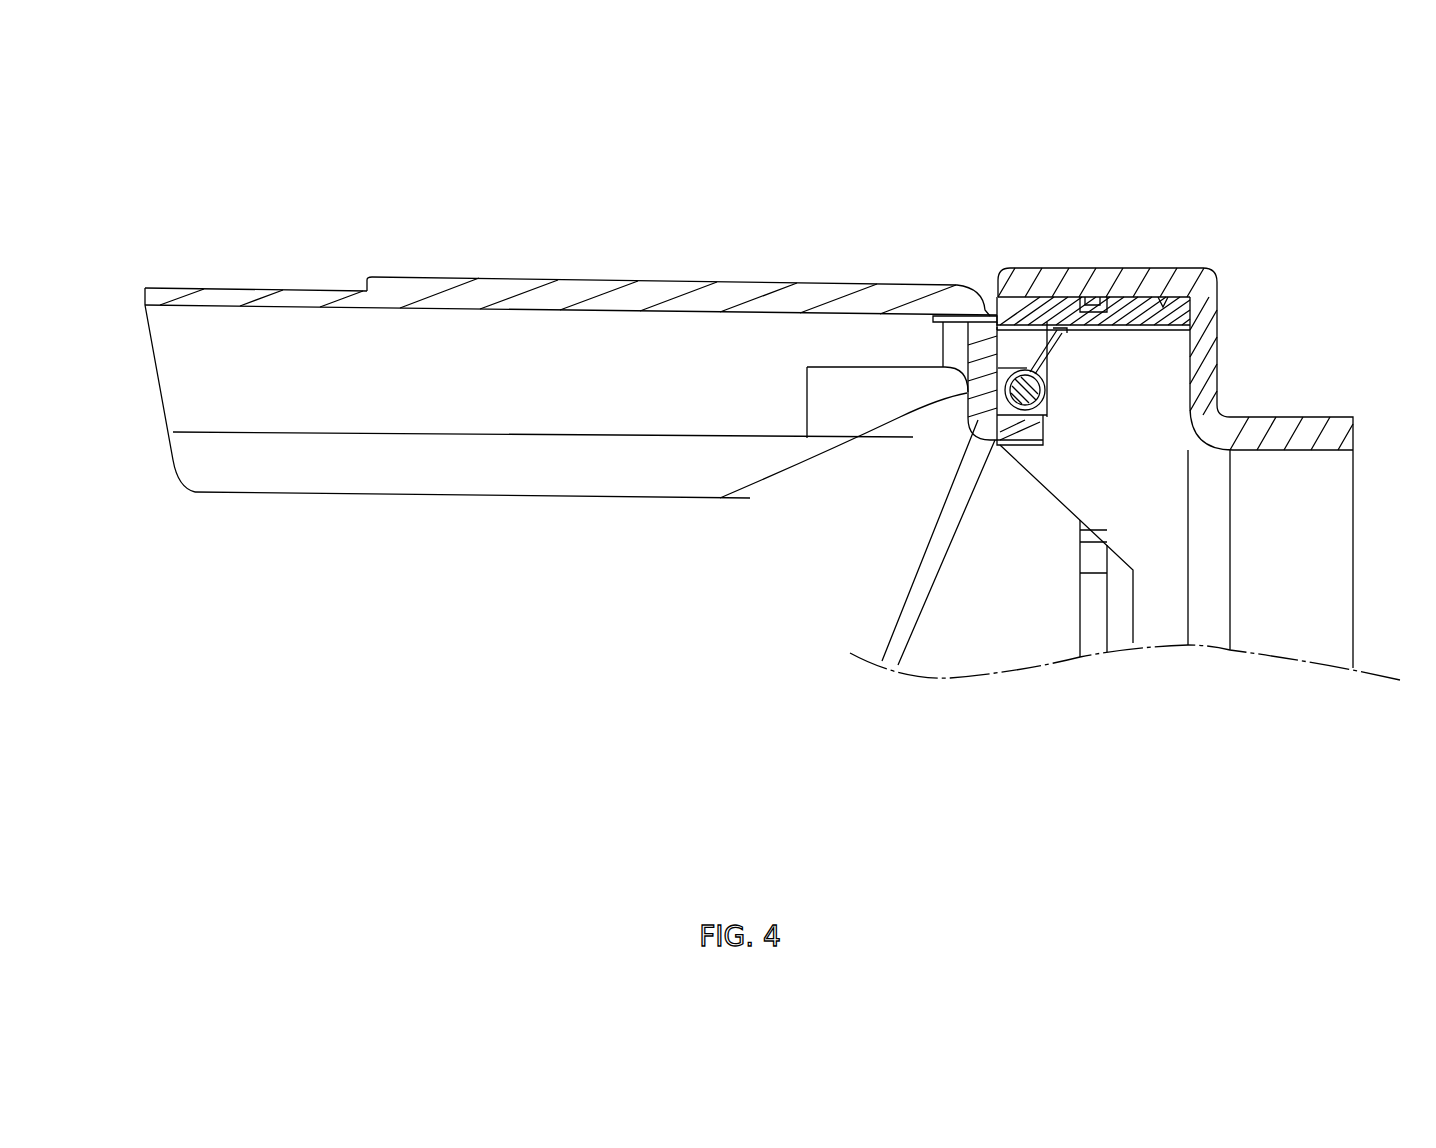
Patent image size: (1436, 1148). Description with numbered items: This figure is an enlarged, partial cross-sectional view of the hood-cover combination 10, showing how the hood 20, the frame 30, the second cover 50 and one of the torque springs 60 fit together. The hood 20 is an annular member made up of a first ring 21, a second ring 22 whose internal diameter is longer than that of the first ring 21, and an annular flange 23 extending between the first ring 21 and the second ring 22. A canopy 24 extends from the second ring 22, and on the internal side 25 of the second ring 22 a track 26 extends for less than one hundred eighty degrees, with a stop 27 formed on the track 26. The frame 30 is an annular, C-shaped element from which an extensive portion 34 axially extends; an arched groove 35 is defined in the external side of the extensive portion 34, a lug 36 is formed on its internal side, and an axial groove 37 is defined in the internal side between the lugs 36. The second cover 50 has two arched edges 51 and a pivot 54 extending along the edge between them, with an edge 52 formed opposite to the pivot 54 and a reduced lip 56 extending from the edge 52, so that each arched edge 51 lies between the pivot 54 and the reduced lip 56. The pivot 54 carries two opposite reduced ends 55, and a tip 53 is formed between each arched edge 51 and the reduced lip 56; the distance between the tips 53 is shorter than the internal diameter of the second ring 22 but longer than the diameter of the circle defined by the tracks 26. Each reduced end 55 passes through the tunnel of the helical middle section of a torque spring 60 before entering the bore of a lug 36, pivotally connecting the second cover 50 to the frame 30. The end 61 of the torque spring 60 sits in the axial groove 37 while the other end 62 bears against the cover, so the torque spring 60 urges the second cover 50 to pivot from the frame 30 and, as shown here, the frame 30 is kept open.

The hood-cover combination 10 is at (1192, 198).
The hood 20 is at (1322, 185).
The first ring 21 is at (1277, 435).
The second ring 22 is at (1178, 273).
The annular flange 23 is at (1197, 360).
The canopy 24 is at (940, 650).
The internal side 25 is at (1165, 305).
The track 26 is at (1102, 305).
The stop 27 is at (1092, 557).
The frame 30 is at (1160, 622).
The extensive portion 34 is at (1067, 482).
The arched groove 35 is at (1083, 300).
The lug 36 is at (1026, 370).
The axial groove 37 is at (1153, 330).
The second cover 50 is at (720, 297).
The arched edge 51 is at (399, 505).
The edge 52 is at (365, 290).
The tip 53 is at (185, 508).
The pivot 54 is at (943, 448).
The reduced end 55 is at (1014, 372).
The reduced lip 56 is at (248, 296).
The torque spring 60 is at (957, 400).
The end 61 is at (1060, 330).
The end 62 is at (937, 317).